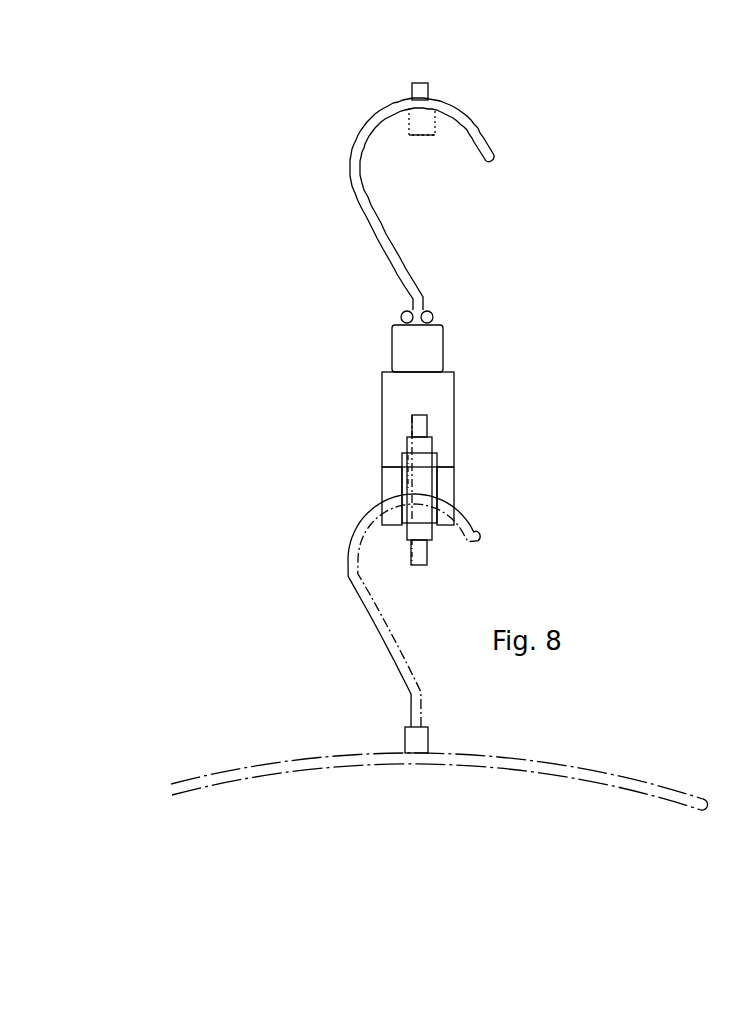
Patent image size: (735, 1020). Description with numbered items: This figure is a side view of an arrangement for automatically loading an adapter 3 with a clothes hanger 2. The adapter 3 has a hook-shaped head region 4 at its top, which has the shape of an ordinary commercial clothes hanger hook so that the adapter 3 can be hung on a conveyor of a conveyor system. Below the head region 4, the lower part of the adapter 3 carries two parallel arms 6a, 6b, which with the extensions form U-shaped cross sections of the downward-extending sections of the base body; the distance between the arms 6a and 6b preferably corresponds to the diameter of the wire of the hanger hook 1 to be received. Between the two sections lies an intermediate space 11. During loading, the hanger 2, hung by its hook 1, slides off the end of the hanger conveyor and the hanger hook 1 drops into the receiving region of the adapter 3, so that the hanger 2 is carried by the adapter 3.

The hanger hook 1 is at (398, 657).
The clothes hanger 2 is at (577, 770).
The adapter 3 is at (443, 402).
The hook-shaped head region 4 is at (347, 93).
The arm 6a is at (392, 490).
The arm 6b is at (448, 487).
The intermediate space 11 is at (422, 480).